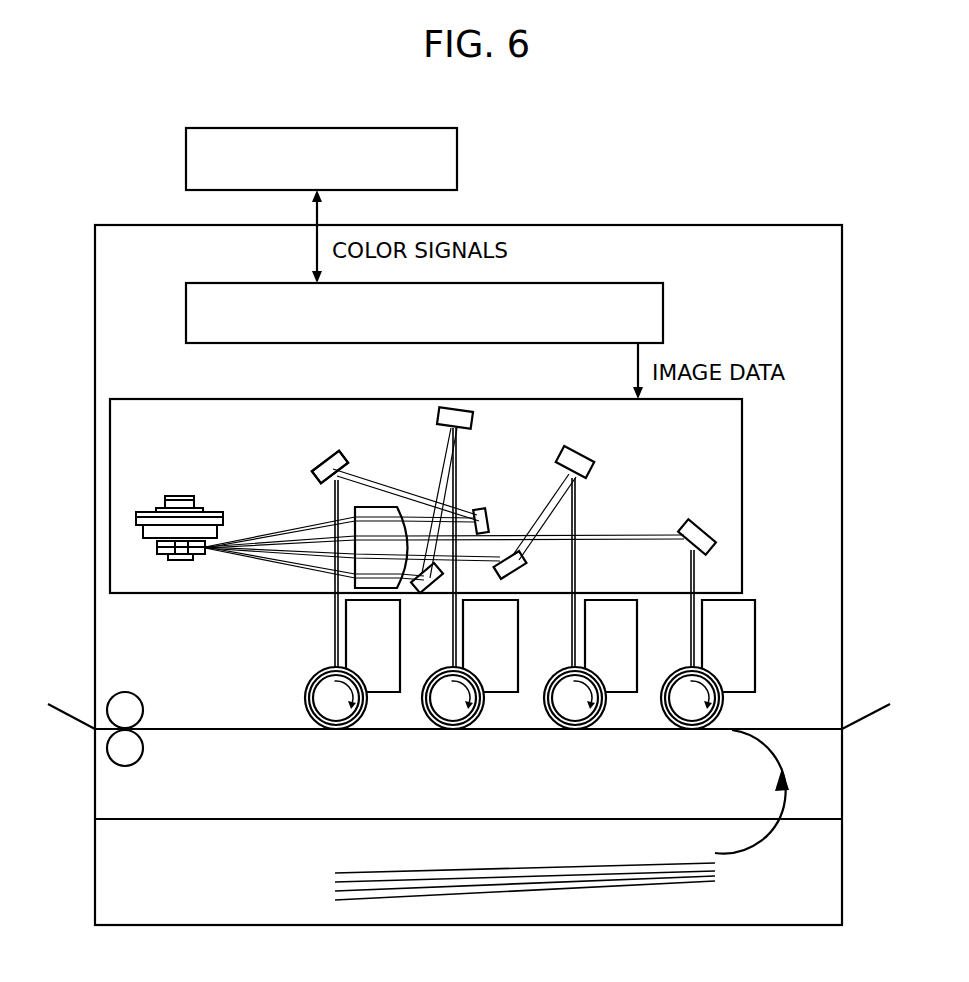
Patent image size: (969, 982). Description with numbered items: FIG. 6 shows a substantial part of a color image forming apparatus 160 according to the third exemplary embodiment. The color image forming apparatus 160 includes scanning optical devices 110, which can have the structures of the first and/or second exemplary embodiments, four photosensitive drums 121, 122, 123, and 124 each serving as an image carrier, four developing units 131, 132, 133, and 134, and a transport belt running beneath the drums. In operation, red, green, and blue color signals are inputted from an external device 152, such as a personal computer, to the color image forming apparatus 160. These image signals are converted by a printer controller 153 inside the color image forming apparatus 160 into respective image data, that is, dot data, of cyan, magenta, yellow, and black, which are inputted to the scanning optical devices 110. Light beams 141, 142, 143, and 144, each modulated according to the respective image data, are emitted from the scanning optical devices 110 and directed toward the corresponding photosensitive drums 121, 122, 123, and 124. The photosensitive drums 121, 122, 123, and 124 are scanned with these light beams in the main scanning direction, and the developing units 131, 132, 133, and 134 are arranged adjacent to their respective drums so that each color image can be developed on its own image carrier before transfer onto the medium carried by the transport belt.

The scanning optical device 110 is at (742, 475).
The photosensitive drum 121 is at (337, 715).
The photosensitive drum 122 is at (454, 715).
The photosensitive drum 123 is at (574, 715).
The photosensitive drum 124 is at (691, 715).
The developing unit 131 is at (385, 692).
The developing unit 132 is at (503, 692).
The developing unit 133 is at (626, 692).
The developing unit 134 is at (738, 692).
The light beam 141 is at (352, 583).
The light beam 142 is at (423, 592).
The light beam 143 is at (507, 578).
The light beam 144 is at (680, 549).
The external device 152 is at (457, 160).
The printer controller 153 is at (663, 308).
The color image forming apparatus 160 is at (690, 225).